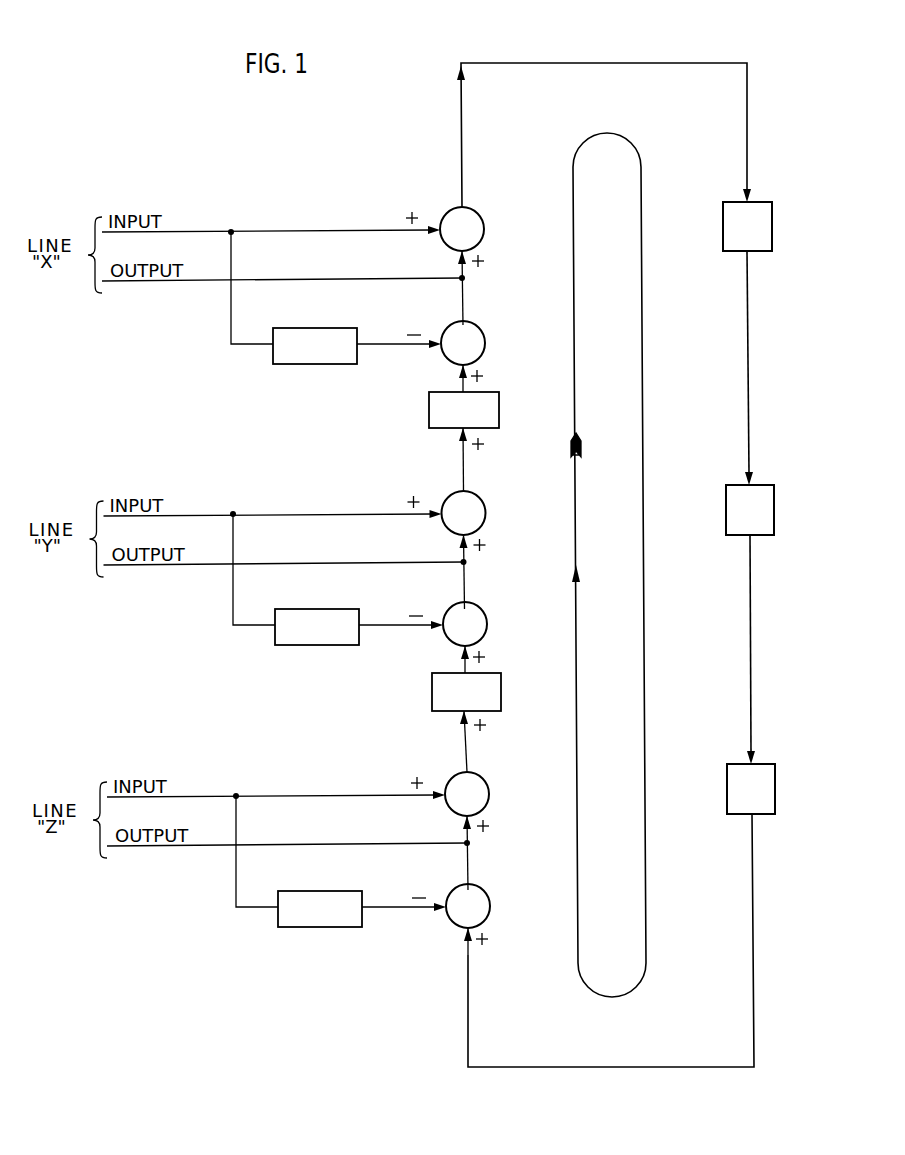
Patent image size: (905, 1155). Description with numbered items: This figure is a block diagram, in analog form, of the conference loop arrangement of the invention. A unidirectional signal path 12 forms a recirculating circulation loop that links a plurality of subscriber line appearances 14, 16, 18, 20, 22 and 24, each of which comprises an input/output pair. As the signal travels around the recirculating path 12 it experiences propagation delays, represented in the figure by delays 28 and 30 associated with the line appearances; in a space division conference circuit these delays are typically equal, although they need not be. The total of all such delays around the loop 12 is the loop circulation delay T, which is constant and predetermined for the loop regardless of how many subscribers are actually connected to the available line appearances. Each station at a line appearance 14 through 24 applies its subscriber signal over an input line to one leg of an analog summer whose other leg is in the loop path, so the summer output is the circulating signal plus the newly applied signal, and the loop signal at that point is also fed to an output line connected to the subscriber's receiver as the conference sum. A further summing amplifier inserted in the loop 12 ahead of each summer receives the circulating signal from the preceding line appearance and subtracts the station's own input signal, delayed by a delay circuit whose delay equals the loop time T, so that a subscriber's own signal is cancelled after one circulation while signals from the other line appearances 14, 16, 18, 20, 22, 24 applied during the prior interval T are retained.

The unidirectional signal path 12 is at (601, 63).
The subscriber line appearance 14 is at (762, 227).
The subscriber line appearance 16 is at (763, 511).
The subscriber line appearance 18 is at (765, 789).
The subscriber line appearance 20 is at (526, 795).
The subscriber line appearance 22 is at (522, 514).
The subscriber line appearance 24 is at (492, 242).
The delay 28 is at (432, 695).
The delay 30 is at (430, 407).